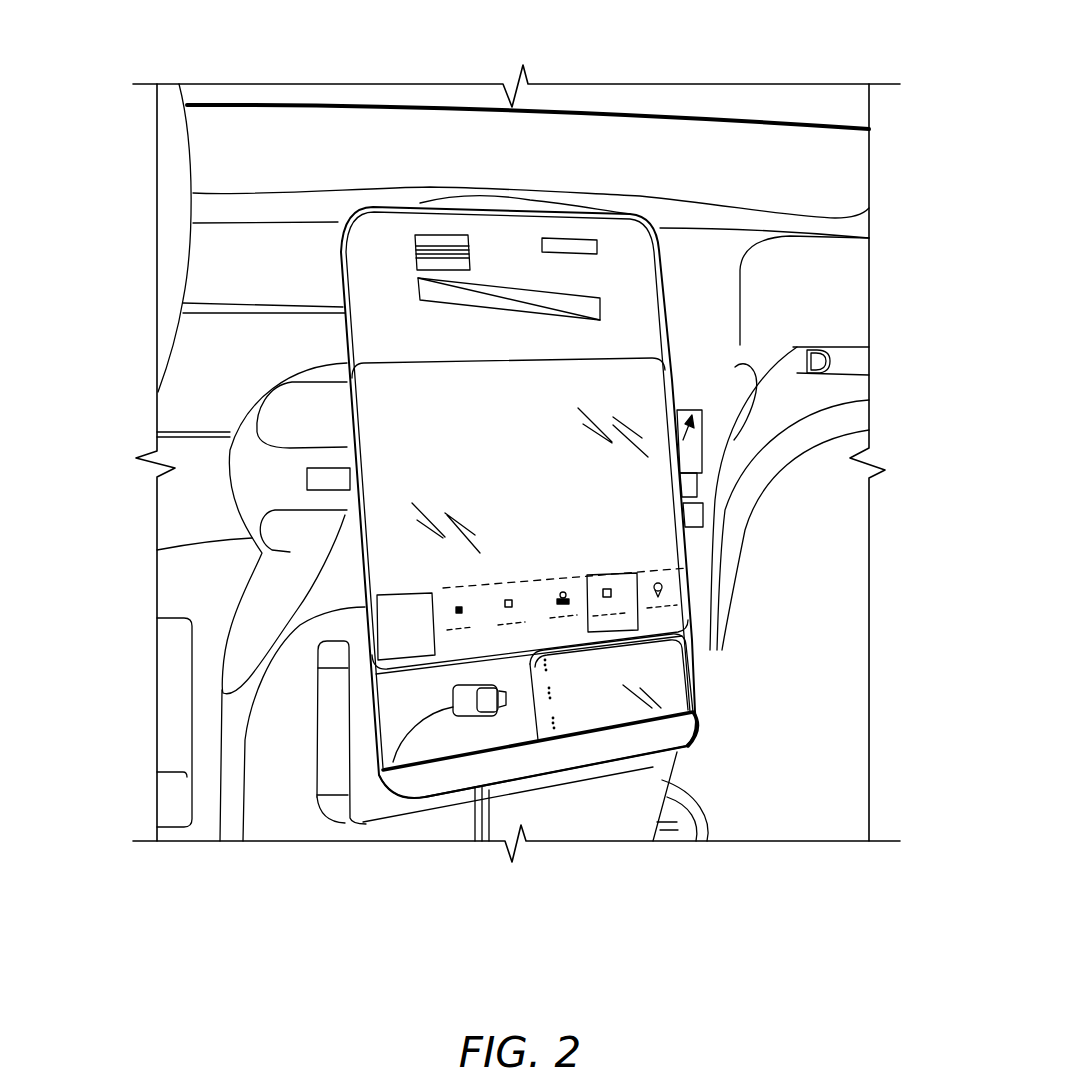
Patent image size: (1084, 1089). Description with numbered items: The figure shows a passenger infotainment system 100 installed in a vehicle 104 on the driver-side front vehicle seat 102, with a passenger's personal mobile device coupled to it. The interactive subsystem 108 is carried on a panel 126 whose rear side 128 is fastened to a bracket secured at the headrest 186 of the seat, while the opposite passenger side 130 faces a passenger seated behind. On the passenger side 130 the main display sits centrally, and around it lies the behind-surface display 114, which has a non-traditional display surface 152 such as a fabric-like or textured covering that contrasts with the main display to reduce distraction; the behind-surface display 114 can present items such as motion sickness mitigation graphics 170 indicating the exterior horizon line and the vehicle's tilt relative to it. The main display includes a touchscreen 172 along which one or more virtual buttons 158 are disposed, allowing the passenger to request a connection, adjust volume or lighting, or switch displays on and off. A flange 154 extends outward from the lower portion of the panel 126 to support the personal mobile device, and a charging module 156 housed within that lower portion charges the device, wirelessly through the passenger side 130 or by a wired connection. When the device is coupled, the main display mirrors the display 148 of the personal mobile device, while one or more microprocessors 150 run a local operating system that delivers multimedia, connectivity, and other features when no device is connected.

The passenger infotainment system 100 is at (593, 183).
The vehicle seat 102 is at (278, 575).
The vehicle 104 is at (848, 104).
The interactive subsystem 108 is at (683, 247).
The behind-surface display 114 is at (637, 285).
The panel 126 is at (768, 380).
The rear side 128 is at (358, 720).
The passenger side 130 is at (503, 707).
The display of personal mobile device 148 is at (656, 680).
The microprocessor 150 is at (676, 540).
The non-traditional display surface 152 is at (372, 311).
The flange 154 is at (414, 774).
The charging module 156 is at (453, 703).
The virtual buttons 158 is at (460, 610).
The motion sickness mitigation graphics 170 is at (512, 298).
The touchscreen 172 is at (663, 453).
The headrest 186 is at (470, 196).